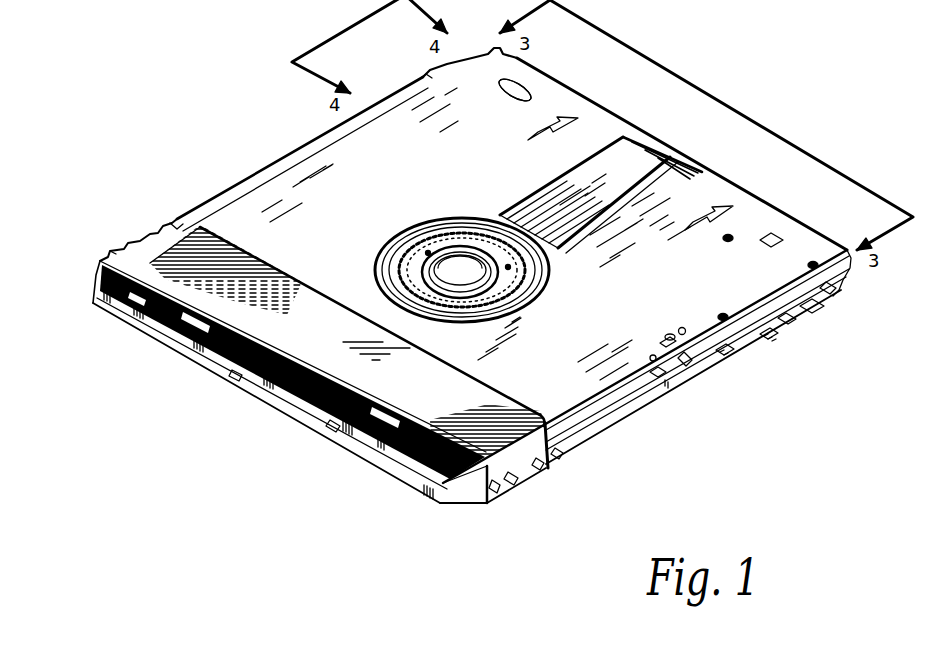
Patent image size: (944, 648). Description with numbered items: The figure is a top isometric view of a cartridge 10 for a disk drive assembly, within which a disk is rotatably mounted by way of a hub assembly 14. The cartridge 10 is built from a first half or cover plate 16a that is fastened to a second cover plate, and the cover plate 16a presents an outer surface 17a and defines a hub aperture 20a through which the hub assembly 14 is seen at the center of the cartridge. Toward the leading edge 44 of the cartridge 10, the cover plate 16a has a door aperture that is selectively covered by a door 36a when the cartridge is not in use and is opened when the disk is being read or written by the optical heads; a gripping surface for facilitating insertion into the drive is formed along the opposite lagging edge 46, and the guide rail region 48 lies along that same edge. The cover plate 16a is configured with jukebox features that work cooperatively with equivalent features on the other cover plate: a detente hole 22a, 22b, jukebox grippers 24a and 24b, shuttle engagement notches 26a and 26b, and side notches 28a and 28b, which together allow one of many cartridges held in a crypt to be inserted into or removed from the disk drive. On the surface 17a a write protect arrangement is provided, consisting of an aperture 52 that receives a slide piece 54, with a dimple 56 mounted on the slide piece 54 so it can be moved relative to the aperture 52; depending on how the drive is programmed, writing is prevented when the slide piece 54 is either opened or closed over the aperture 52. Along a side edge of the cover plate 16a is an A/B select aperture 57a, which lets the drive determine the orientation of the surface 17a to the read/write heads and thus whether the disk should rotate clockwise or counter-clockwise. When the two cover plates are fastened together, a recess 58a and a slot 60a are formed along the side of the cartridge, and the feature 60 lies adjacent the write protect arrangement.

The cartridge 10 is at (750, 467).
The hub assembly 14 is at (548, 298).
The first cover plate 16a is at (724, 358).
The surface of cover plate 17a is at (648, 306).
The hub aperture 20a is at (546, 283).
The detente hole 22a is at (506, 92).
The detente hole 22b is at (523, 90).
The jukebox gripper 24a is at (120, 252).
The jukebox gripper 24b is at (500, 488).
The shuttle engagement notch 26a is at (177, 221).
The shuttle engagement notch 26b is at (546, 466).
The side notch 28a is at (420, 76).
The side notch 28b is at (784, 320).
The door 36a is at (643, 192).
The leading edge 44 is at (715, 165).
The lagging edge 46 is at (232, 377).
The guide rail 48 is at (337, 427).
The aperture 52 is at (690, 359).
The slide piece 54 is at (660, 347).
The dimple 56 is at (668, 335).
The A/B select aperture 57a is at (678, 386).
The recess 58a is at (838, 290).
The latch lever 60 is at (680, 322).
The slot 60a is at (800, 313).